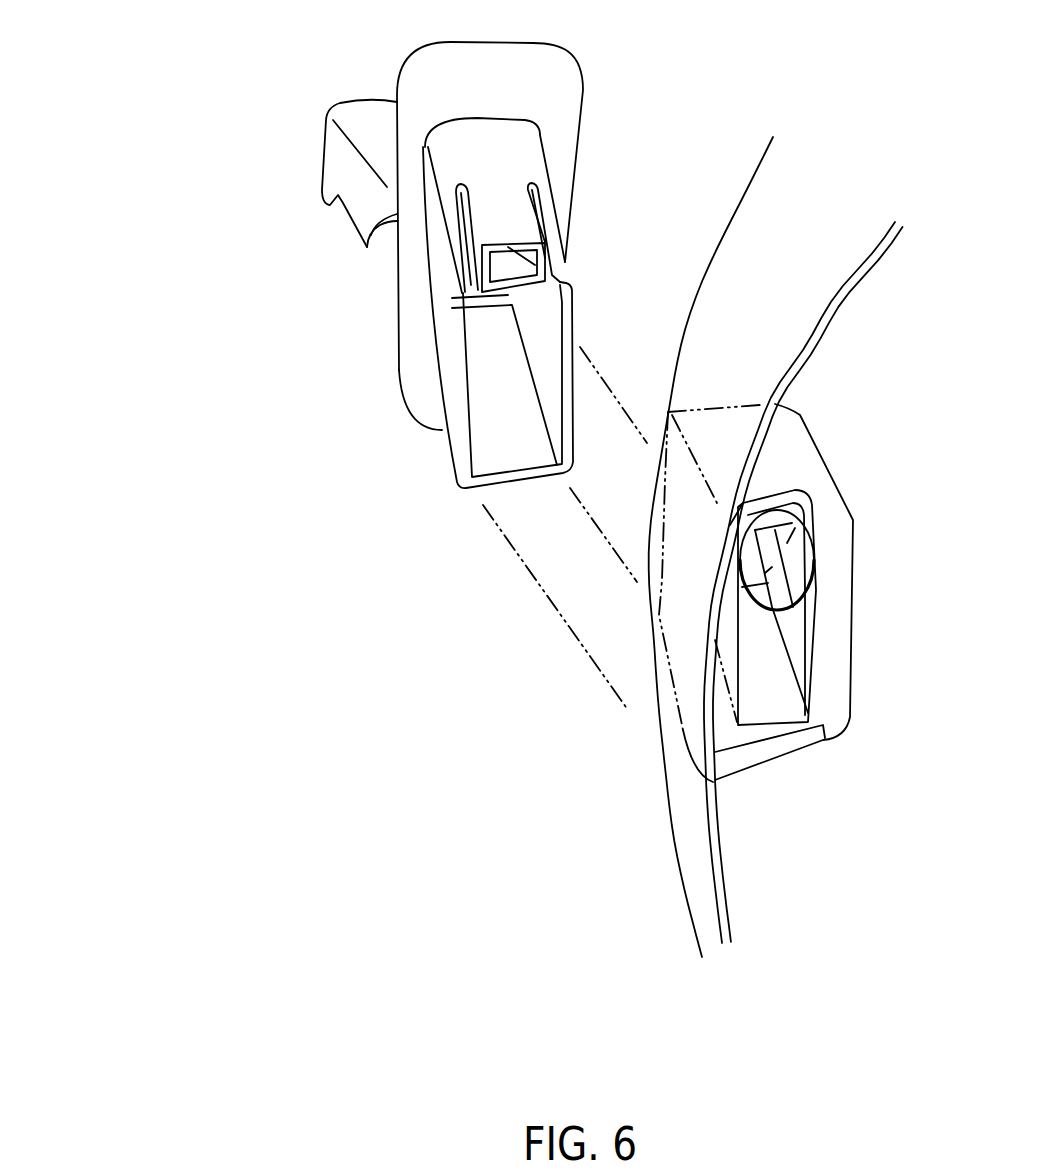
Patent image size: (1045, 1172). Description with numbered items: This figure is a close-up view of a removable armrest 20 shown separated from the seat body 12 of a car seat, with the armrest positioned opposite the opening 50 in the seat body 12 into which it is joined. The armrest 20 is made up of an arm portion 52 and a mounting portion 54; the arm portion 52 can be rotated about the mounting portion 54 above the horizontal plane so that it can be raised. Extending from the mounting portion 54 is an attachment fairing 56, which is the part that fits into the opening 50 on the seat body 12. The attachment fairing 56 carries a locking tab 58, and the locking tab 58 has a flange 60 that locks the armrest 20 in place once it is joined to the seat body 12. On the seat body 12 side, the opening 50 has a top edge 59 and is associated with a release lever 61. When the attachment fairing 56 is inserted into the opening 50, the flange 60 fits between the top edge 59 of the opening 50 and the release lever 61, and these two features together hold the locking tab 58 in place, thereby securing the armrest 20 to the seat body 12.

The seat body 12 is at (673, 833).
The armrest 20 is at (222, 242).
The opening 50 is at (677, 568).
The arm portion 52 is at (330, 108).
The mounting portion 54 is at (580, 67).
The attachment fairing 56 is at (565, 253).
The locking tab 58 is at (498, 217).
The top edge 59 is at (765, 493).
The flange 60 is at (512, 247).
The release lever 61 is at (800, 570).